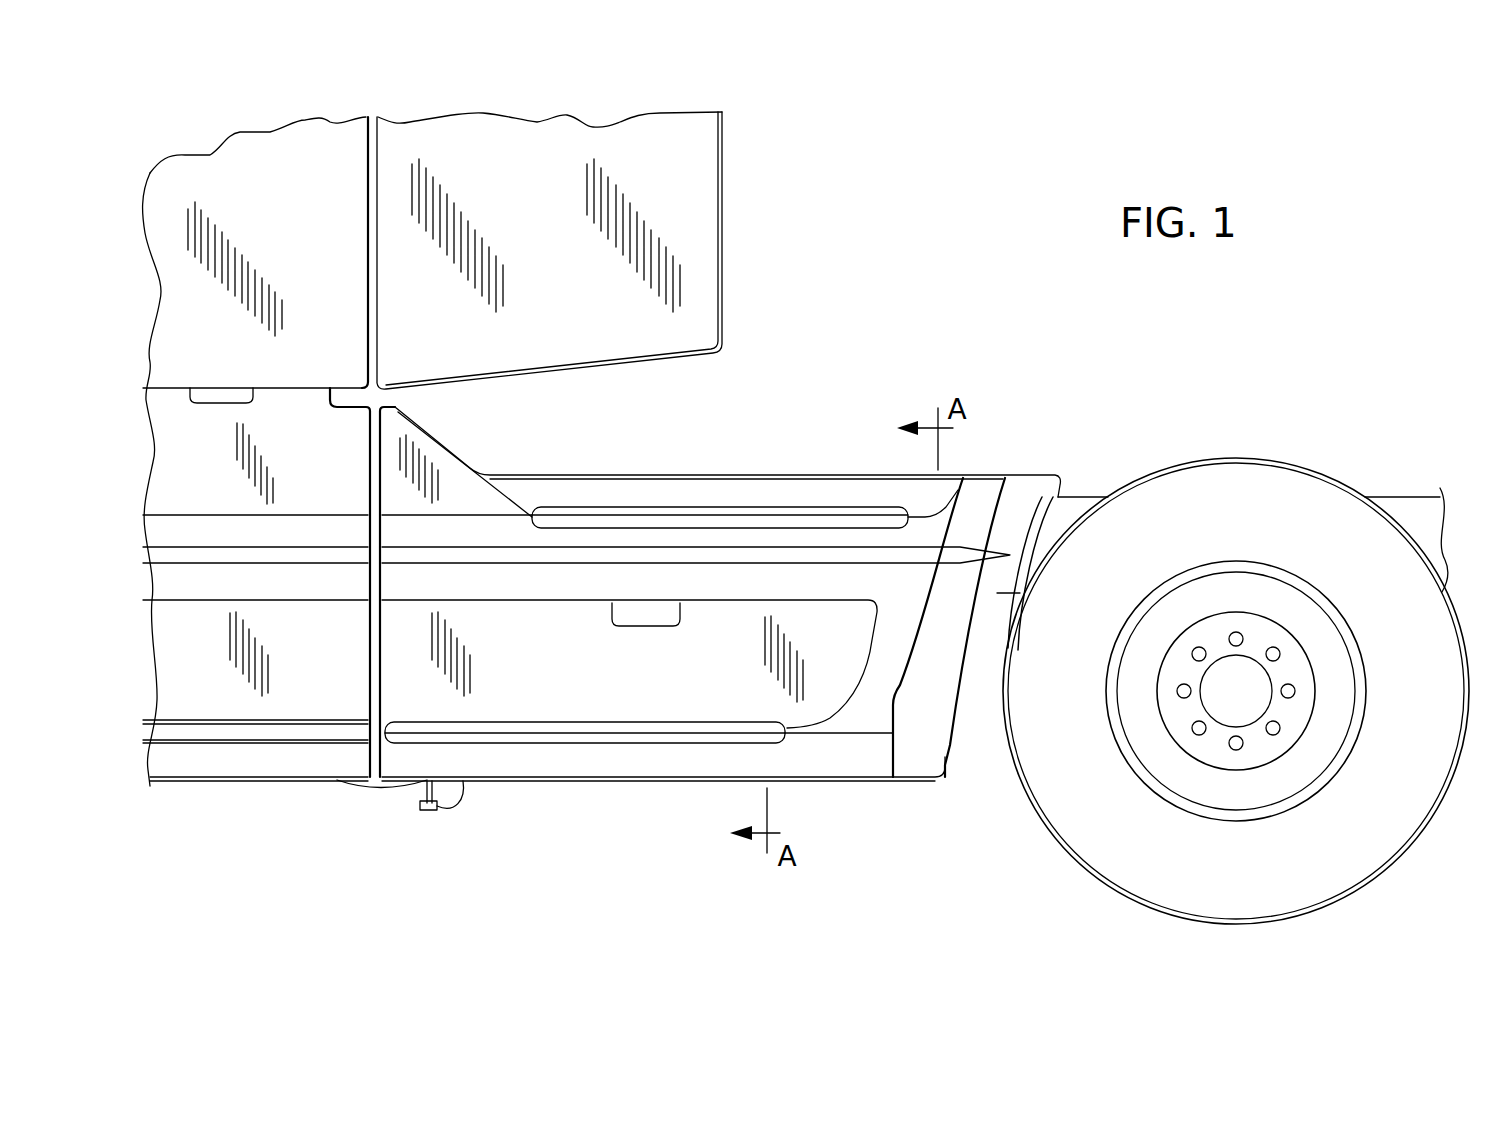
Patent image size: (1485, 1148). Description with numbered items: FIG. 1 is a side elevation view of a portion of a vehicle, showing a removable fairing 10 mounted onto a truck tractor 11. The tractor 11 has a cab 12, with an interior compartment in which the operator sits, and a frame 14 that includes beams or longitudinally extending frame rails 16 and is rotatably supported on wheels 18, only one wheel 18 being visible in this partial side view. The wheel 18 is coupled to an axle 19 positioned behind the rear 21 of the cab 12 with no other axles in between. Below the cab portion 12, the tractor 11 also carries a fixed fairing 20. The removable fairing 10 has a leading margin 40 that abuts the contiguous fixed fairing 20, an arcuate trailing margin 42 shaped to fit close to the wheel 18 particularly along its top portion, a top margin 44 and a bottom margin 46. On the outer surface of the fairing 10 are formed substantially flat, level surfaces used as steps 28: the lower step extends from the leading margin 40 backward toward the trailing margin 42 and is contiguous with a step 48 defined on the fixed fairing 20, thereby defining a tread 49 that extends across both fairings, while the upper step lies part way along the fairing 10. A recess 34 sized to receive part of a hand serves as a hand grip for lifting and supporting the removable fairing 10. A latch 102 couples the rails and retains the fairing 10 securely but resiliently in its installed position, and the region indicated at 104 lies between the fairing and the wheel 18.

The removable fairing 10 is at (730, 476).
The truck tractor 11 is at (745, 299).
The cab 12 is at (330, 129).
The frame 14 is at (1072, 496).
The frame rail 16 is at (1095, 496).
The wheel 18 is at (1262, 458).
The axle 19 is at (1245, 715).
The fixed fairing 20 is at (207, 783).
The rear of the cab 21 is at (377, 333).
The steps 28 is at (805, 507).
The recess 34 is at (680, 626).
The leading margin 40 is at (375, 457).
The trailing margin 42 is at (901, 692).
The top margin 44 is at (549, 480).
The bottom margin 46 is at (628, 762).
The step 48 is at (203, 720).
The tread 49 is at (395, 722).
The latch 102 is at (375, 812).
The fender gap region 104 is at (978, 745).